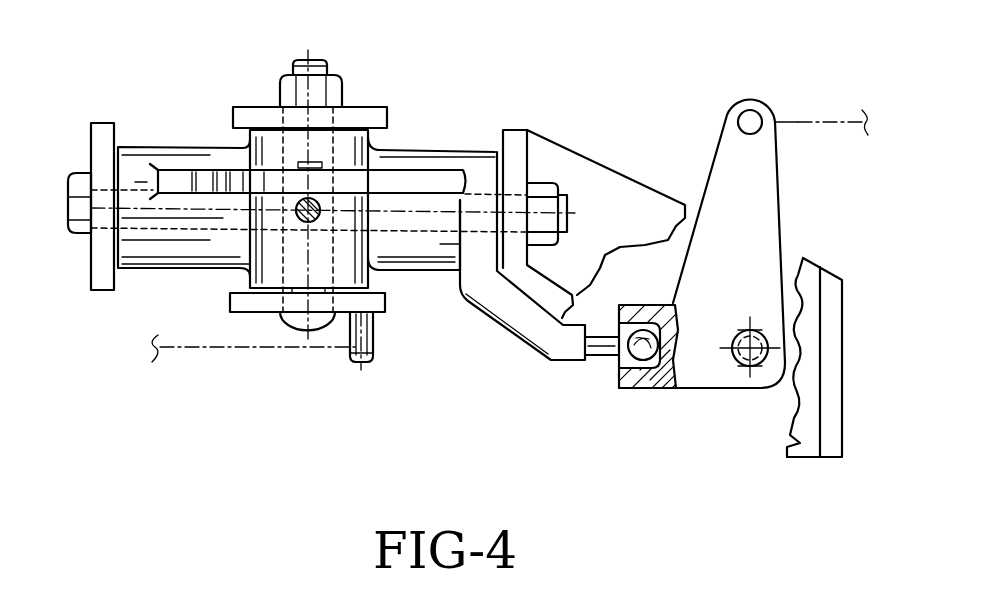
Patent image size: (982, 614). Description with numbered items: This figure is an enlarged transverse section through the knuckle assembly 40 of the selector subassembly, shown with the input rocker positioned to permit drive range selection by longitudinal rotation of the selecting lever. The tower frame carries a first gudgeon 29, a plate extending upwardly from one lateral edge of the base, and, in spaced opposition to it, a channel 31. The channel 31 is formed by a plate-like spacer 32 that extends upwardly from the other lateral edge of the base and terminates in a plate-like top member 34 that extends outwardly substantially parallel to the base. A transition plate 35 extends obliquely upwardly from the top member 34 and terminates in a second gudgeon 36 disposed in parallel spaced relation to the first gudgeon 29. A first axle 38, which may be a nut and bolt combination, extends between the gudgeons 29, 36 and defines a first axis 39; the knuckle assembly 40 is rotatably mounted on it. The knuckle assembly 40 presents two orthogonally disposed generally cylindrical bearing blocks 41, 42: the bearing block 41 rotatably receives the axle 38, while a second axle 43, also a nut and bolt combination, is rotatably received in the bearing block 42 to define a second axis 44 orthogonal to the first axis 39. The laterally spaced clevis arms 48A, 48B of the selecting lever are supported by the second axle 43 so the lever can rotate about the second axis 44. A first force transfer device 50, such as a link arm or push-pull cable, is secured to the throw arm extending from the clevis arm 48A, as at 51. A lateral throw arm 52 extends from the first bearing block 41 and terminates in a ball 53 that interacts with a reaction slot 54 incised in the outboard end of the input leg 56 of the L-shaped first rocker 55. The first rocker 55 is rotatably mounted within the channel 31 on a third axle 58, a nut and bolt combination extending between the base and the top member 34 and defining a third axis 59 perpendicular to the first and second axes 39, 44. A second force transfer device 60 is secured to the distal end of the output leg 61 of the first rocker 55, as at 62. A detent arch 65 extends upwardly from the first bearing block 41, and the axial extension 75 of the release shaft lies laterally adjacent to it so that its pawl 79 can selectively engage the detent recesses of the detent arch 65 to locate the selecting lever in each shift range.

The first gudgeon 29 is at (101, 124).
The channel 31 is at (662, 203).
The spacer 32 is at (833, 438).
The top member 34 is at (800, 443).
The transition plate 35 is at (583, 170).
The second gudgeon 36 is at (513, 137).
The first axle 38 is at (82, 180).
The first axis 39 is at (64, 205).
The knuckle assembly 40 is at (157, 271).
The bearing block 41 is at (428, 252).
The bearing block 42 is at (268, 277).
The second axle 43 is at (335, 90).
The second axis 44 is at (308, 55).
The clevis arm 48A is at (380, 311).
The clevis arm 48B is at (362, 117).
The first force transfer device 50 is at (218, 348).
The securing location on throw arm 51 is at (352, 356).
The lateral throw arm 52 is at (505, 313).
The ball 53 is at (643, 338).
The reaction slot 54 is at (625, 363).
The first rocker 55 is at (784, 241).
The input leg 56 is at (632, 390).
The third axle 58 is at (768, 357).
The third axis 59 is at (748, 350).
The second force transfer device 60 is at (793, 122).
The output leg 61 is at (752, 184).
The securing location on output leg 62 is at (750, 120).
The detent arch 65 is at (413, 183).
The axial extension 75 is at (320, 204).
The pawl 79 is at (301, 160).